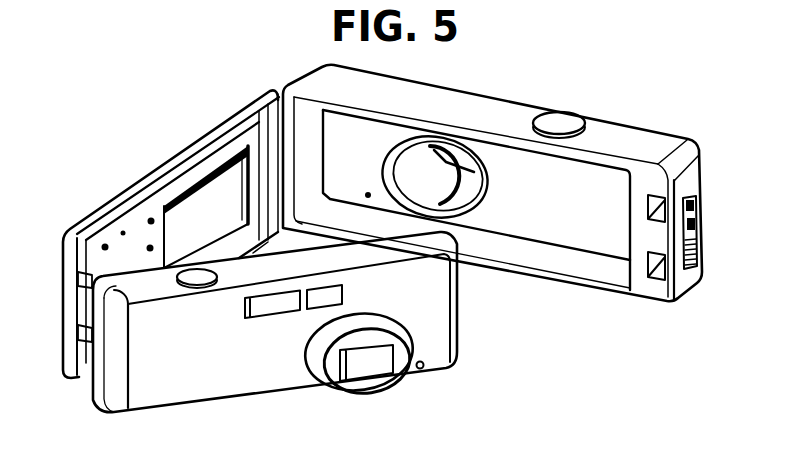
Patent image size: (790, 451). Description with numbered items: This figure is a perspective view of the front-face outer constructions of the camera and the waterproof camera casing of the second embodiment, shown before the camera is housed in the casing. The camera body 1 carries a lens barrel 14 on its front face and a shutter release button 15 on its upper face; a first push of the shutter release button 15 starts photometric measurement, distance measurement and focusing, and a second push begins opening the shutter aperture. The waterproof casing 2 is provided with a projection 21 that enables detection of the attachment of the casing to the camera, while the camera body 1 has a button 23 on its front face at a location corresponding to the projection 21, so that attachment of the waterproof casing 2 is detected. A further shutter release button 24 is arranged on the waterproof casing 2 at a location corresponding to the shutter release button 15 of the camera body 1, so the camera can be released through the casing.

The camera body 1 is at (437, 325).
The waterproof casing 2 is at (279, 81).
The lens barrel 14 is at (411, 392).
The shutter release button 15 is at (198, 276).
The projection 21 is at (365, 178).
The button 23 is at (442, 362).
The shutter release button 24 is at (561, 123).